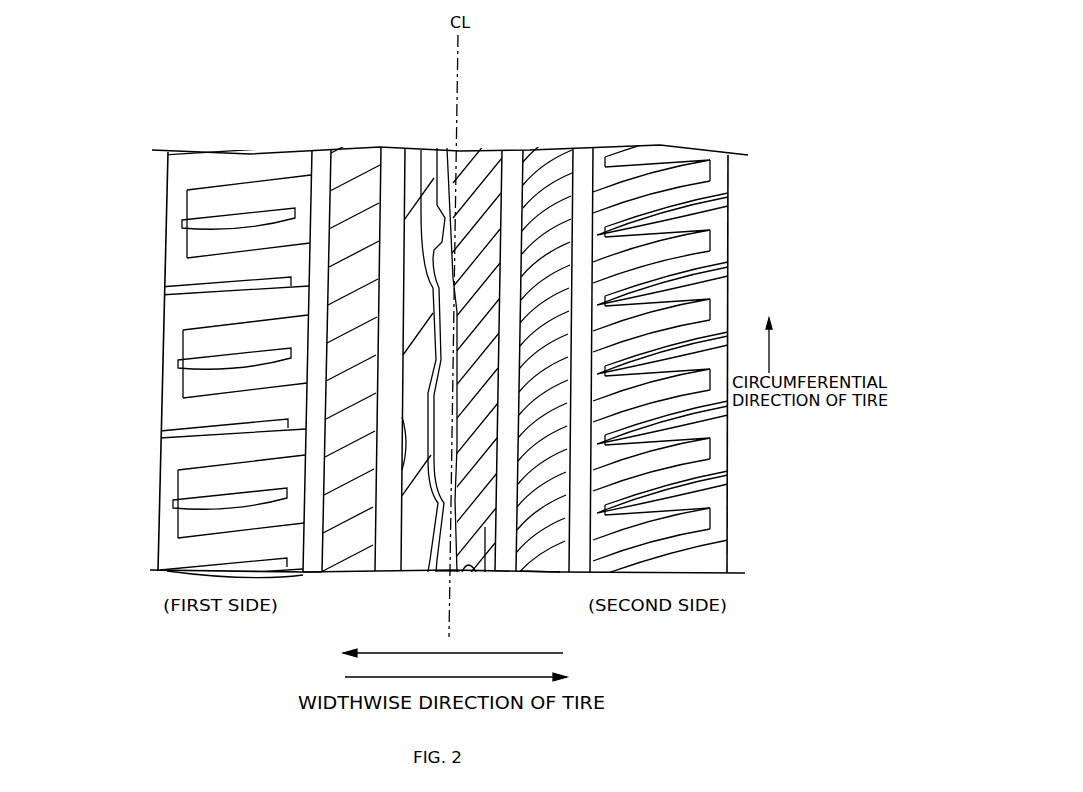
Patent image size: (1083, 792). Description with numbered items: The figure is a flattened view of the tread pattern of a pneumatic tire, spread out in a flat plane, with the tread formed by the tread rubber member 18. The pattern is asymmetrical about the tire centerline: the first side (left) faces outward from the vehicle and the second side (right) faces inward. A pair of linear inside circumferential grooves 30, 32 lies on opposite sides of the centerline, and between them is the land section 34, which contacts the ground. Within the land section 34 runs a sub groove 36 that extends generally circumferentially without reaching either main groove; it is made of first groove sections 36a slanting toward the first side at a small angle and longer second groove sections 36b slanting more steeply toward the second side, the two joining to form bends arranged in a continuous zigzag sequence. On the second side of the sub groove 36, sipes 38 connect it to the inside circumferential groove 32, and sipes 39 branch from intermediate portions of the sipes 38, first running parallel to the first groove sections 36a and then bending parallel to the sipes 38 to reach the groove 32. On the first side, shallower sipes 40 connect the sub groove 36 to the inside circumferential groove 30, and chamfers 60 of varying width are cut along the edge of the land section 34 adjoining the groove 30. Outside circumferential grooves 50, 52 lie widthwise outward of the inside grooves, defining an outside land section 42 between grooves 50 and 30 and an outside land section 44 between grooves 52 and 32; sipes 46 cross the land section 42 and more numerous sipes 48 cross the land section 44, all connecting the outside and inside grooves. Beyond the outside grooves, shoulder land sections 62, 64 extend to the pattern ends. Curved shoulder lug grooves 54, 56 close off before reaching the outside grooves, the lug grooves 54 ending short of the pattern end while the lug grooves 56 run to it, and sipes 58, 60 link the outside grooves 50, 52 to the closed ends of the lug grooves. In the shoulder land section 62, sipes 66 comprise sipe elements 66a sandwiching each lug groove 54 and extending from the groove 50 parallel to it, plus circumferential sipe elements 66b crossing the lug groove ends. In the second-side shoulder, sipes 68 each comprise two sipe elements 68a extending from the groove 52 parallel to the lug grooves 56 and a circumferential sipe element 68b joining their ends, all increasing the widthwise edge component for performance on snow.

The tread rubber member 18 is at (657, 148).
The inside circumferential groove 30 is at (390, 177).
The inside circumferential groove 32 is at (516, 178).
The land section 34 is at (415, 158).
The sub groove 36 is at (425, 573).
The first groove section 36a is at (421, 150).
The second groove section 36b is at (438, 163).
The sipe 38 is at (485, 574).
The sipe 39 is at (460, 571).
The sipe 40 is at (425, 575).
The outside land section 42 is at (355, 177).
The outside land section 44 is at (545, 178).
The sipe 46 is at (331, 573).
The sipe 48 is at (533, 571).
The outside circumferential groove 50 is at (320, 177).
The outside circumferential groove 52 is at (585, 162).
The shoulder lug groove 54 is at (252, 220).
The shoulder lug groove 56 is at (703, 207).
The sipe 58 is at (302, 208).
The sipe 60 is at (708, 213).
The shoulder land section 62 is at (197, 453).
The shoulder land section 64 is at (697, 495).
The sipe 66 is at (196, 356).
The sipe element 66a is at (180, 330).
The sipe element 66b is at (178, 360).
The sipe 68 is at (699, 525).
The sipe element 68a is at (698, 507).
The sipe element 68b is at (708, 517).